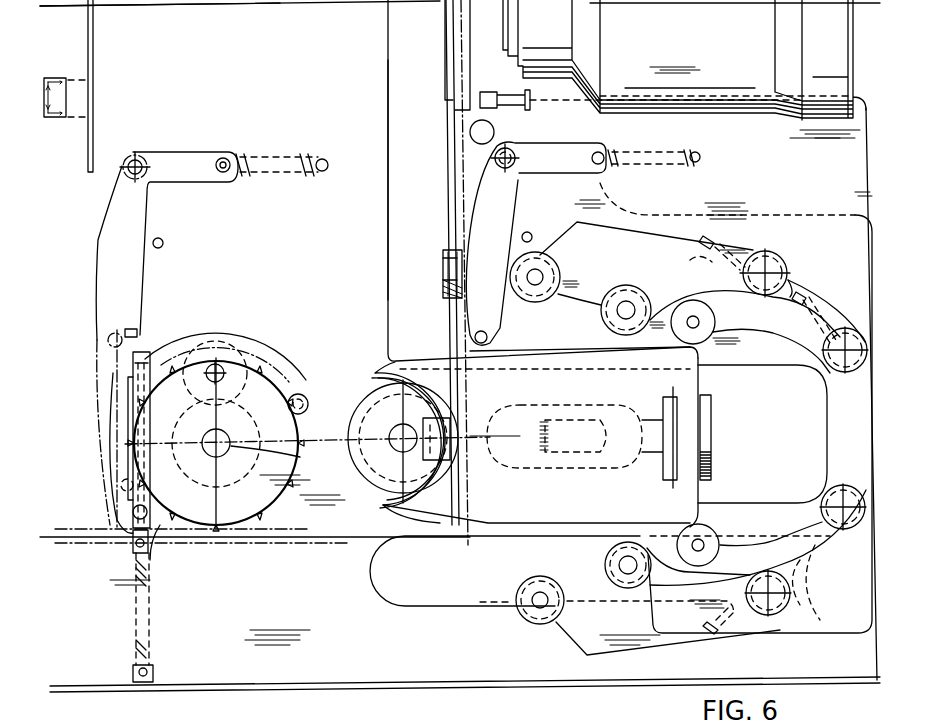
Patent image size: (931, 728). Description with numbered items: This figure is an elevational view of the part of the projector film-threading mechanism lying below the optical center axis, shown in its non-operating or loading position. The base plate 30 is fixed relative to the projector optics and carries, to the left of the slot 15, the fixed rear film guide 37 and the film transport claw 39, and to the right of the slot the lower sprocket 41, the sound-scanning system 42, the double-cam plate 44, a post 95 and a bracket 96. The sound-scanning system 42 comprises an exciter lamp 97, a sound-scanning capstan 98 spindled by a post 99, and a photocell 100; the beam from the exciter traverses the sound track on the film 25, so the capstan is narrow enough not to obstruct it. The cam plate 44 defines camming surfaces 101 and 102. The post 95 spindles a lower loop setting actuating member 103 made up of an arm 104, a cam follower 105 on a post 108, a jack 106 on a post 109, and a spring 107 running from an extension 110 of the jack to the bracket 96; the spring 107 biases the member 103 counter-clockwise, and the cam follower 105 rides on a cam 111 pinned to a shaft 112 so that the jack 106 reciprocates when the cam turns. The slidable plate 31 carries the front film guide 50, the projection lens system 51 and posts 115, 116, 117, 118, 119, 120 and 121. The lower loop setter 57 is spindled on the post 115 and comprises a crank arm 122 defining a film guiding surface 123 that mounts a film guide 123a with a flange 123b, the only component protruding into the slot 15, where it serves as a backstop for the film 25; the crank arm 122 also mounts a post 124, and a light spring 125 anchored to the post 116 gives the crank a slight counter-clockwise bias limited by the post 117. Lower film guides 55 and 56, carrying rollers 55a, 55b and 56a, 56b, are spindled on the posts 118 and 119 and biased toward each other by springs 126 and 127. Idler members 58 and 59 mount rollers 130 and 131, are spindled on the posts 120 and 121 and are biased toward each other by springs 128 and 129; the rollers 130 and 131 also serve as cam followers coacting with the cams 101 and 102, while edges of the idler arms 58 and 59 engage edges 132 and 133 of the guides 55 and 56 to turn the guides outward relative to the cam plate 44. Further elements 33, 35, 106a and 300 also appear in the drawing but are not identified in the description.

The slot 15 is at (450, 102).
The film 25 is at (457, 138).
The base plate 30 is at (282, 78).
The slidable plate 31 is at (385, 195).
The support plate 33 is at (815, 626).
The belt arm 35 is at (410, 610).
The fixed rear film guide 37 is at (95, 48).
The film transport claw 39 is at (95, 79).
The lower sprocket 41 is at (195, 515).
The sound-scanning system 42 is at (478, 466).
The double-cam plate 44 is at (708, 487).
The front film guide 50 is at (457, 32).
The projection lens system 51 is at (678, 42).
The lower film guide 55 is at (748, 243).
The roller 55a is at (558, 262).
The roller 55b is at (605, 293).
The lower film guide 56 is at (650, 647).
The roller 56a is at (520, 612).
The roller 56b is at (608, 550).
The lower loop setting member 57 is at (150, 262).
The idler member 58 is at (838, 308).
The idler member 59 is at (838, 555).
The post 95 is at (307, 396).
The bracket 96 is at (155, 673).
The exciter lamp 97 is at (558, 405).
The sound-scanning capstan 98 is at (347, 482).
The post 99 is at (391, 430).
The photocell 100 is at (428, 463).
The camming surface 101 is at (593, 347).
The camming surface 102 is at (434, 362).
The lower loop setting actuating member 103 is at (258, 343).
The arm 104 is at (268, 365).
The cam follower 105 is at (210, 345).
The jack 106 is at (128, 427).
The bar end 106a is at (155, 345).
The spring 107 is at (153, 605).
The post 108 is at (232, 342).
The post 109 is at (120, 510).
The extension 110 is at (130, 537).
The cam 111 is at (233, 540).
The shaft 112 is at (268, 449).
The post 115 is at (511, 150).
The post 116 is at (702, 157).
The post 117 is at (530, 232).
The post 118 is at (790, 260).
The post 119 is at (766, 618).
The post 120 is at (820, 375).
The post 121 is at (840, 483).
The crank arm 122 is at (518, 196).
The film guiding surface 123 is at (446, 297).
The film guide 123a is at (443, 262).
The flange 123b is at (443, 280).
The post 124 is at (488, 337).
The spring 125 is at (645, 166).
The spring 126 is at (745, 286).
The spring 127 is at (606, 608).
The spring 128 is at (790, 337).
The spring 129 is at (805, 528).
The roller 130 is at (717, 318).
The roller 131 is at (708, 528).
The edge 132 is at (666, 310).
The edge 133 is at (652, 582).
The top rail 300 is at (278, 5).